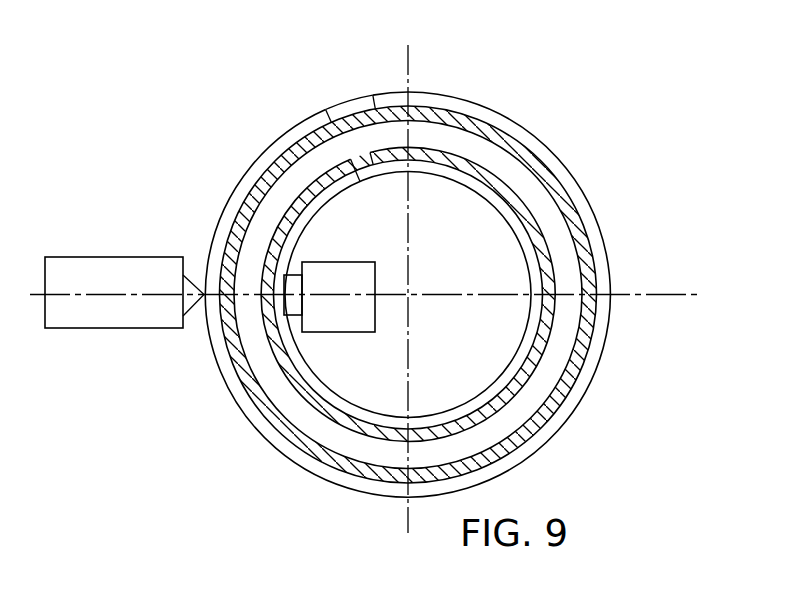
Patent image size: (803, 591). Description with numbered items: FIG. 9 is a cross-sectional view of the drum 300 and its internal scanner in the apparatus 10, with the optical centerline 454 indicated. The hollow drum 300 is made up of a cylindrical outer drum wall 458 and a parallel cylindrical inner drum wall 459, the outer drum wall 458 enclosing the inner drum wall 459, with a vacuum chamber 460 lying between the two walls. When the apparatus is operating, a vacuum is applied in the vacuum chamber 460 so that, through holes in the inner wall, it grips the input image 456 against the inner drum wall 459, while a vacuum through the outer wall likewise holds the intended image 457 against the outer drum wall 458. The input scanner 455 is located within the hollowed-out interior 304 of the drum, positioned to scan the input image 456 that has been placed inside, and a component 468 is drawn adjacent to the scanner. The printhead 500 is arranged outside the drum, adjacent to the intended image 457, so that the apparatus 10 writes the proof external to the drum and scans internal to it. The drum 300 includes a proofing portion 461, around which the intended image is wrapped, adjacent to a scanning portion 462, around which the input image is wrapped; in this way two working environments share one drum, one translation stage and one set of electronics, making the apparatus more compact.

The apparatus 10 is at (230, 133).
The drum 300 is at (352, 100).
The hollowed-out interior 304 is at (598, 330).
The optical centerline 454 is at (666, 292).
The input scanner 455 is at (346, 334).
The input image 456 is at (510, 233).
The intended image 457 is at (507, 117).
The cylindrical outer drum wall 458 is at (557, 177).
The cylindrical inner drum wall 459 is at (545, 233).
The vacuum chamber 460 is at (555, 372).
The proofing portion 461 is at (343, 115).
The scanning portion 462 is at (366, 168).
The window 468 is at (288, 309).
The printhead 500 is at (118, 257).